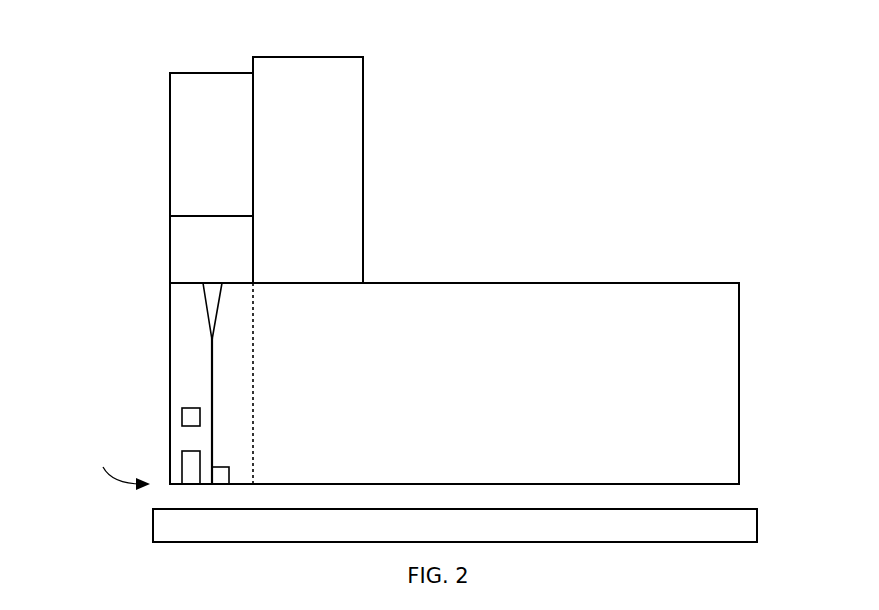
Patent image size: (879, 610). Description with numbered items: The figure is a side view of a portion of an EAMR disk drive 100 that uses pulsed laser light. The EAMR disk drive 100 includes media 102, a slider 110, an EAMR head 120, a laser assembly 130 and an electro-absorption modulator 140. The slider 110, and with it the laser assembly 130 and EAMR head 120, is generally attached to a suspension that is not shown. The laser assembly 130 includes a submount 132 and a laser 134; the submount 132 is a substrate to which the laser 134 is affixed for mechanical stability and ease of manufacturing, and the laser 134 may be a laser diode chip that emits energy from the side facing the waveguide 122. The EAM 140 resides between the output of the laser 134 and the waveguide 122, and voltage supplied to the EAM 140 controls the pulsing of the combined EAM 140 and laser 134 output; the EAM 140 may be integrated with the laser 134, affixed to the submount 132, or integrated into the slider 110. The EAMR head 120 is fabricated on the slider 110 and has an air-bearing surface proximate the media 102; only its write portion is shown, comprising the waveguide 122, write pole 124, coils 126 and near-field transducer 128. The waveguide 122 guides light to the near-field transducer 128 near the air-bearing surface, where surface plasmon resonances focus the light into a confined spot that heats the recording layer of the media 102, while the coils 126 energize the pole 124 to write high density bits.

The EAMR disk drive 100 is at (458, 35).
The laser assembly 130 is at (80, 189).
The laser 134 is at (170, 104).
The electro-absorption modulator (EAM) 140 is at (170, 258).
The submount 132 is at (363, 158).
The slider 110 is at (740, 350).
The EAMR head 120 is at (255, 308).
The waveguide 122 is at (212, 357).
The coils 126 is at (182, 410).
The write pole 124 is at (182, 455).
The near-field transducer (NFT) 128 is at (222, 484).
The media 102 is at (153, 540).